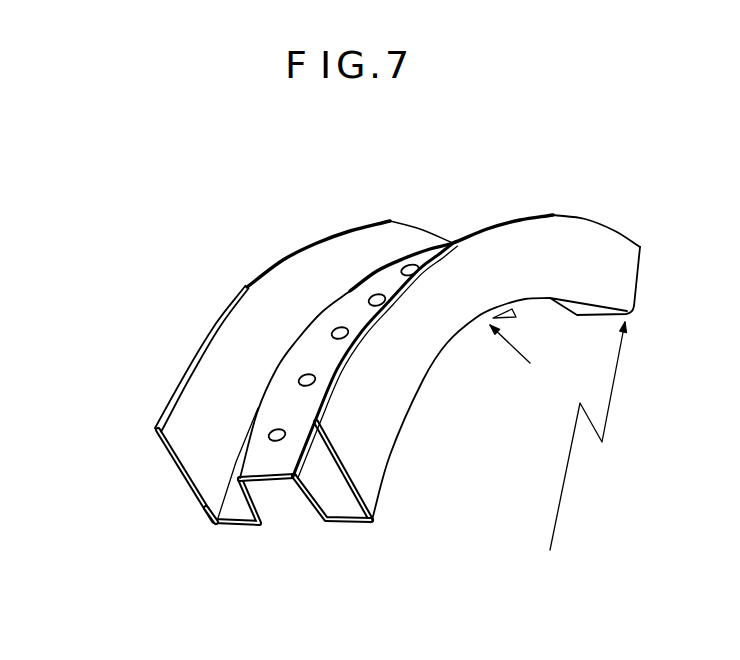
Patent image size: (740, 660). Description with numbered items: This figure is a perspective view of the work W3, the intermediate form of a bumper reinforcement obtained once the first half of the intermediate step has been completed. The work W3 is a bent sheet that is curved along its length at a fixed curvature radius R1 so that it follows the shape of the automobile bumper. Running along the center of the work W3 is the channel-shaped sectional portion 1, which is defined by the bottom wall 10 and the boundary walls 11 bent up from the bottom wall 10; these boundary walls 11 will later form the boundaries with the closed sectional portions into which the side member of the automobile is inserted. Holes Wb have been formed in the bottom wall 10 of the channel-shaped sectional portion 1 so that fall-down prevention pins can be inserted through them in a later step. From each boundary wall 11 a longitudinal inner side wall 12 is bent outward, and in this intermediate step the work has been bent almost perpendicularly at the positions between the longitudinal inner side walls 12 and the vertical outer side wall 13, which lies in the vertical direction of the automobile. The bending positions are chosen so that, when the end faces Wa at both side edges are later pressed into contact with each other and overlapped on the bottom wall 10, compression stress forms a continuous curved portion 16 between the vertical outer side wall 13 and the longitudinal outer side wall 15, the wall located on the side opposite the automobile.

The channel-shaped sectional portion 1 is at (343, 283).
The bottom wall 10 is at (275, 480).
The boundary wall 11 is at (250, 503).
The longitudinal inner side wall 12 is at (232, 528).
The vertical outer side wall 13 is at (206, 512).
The longitudinal outer side wall 15 is at (177, 434).
The curved portion 16 is at (193, 462).
The end face Wa is at (179, 382).
The hole Wb is at (274, 430).
The work W3 is at (539, 365).
The curvature radius R1 is at (588, 436).